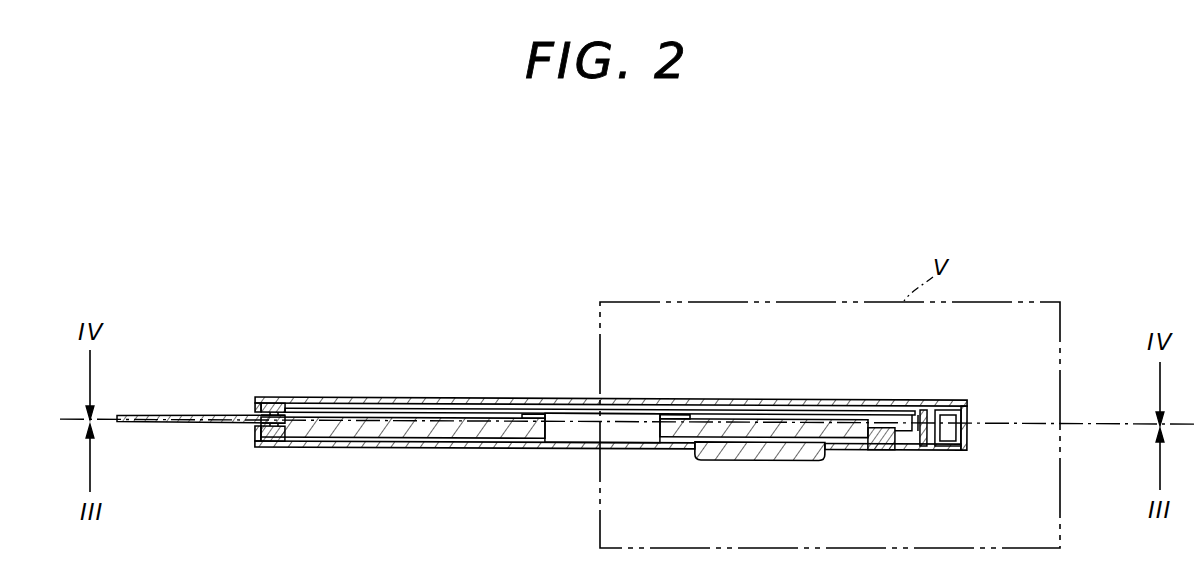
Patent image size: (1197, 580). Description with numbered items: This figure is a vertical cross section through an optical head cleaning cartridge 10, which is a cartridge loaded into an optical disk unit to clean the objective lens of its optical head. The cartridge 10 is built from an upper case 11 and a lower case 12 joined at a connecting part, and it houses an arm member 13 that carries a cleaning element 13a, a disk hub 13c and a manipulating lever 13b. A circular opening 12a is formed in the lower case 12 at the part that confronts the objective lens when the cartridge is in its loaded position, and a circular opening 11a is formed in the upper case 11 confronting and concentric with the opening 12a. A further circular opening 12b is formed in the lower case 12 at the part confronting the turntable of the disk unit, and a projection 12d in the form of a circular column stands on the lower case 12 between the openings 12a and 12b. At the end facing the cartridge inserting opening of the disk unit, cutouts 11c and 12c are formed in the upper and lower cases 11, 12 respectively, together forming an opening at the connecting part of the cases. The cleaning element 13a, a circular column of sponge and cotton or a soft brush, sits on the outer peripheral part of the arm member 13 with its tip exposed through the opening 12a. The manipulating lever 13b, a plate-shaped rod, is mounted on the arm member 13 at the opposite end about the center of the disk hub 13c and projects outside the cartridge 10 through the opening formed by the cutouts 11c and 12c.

The optical head cleaning cartridge 10 is at (713, 189).
The upper case 11 is at (420, 397).
The circular opening 11a is at (868, 399).
The cutout 11c is at (256, 406).
The lower case 12 is at (406, 441).
The circular opening 12a is at (935, 452).
The circular opening 12b is at (515, 441).
The cutout 12c is at (256, 432).
The projection 12d is at (740, 459).
The arm member 13 is at (750, 408).
The cleaning element 13a is at (880, 451).
The manipulating lever 13b is at (167, 425).
The disk hub 13c is at (560, 449).